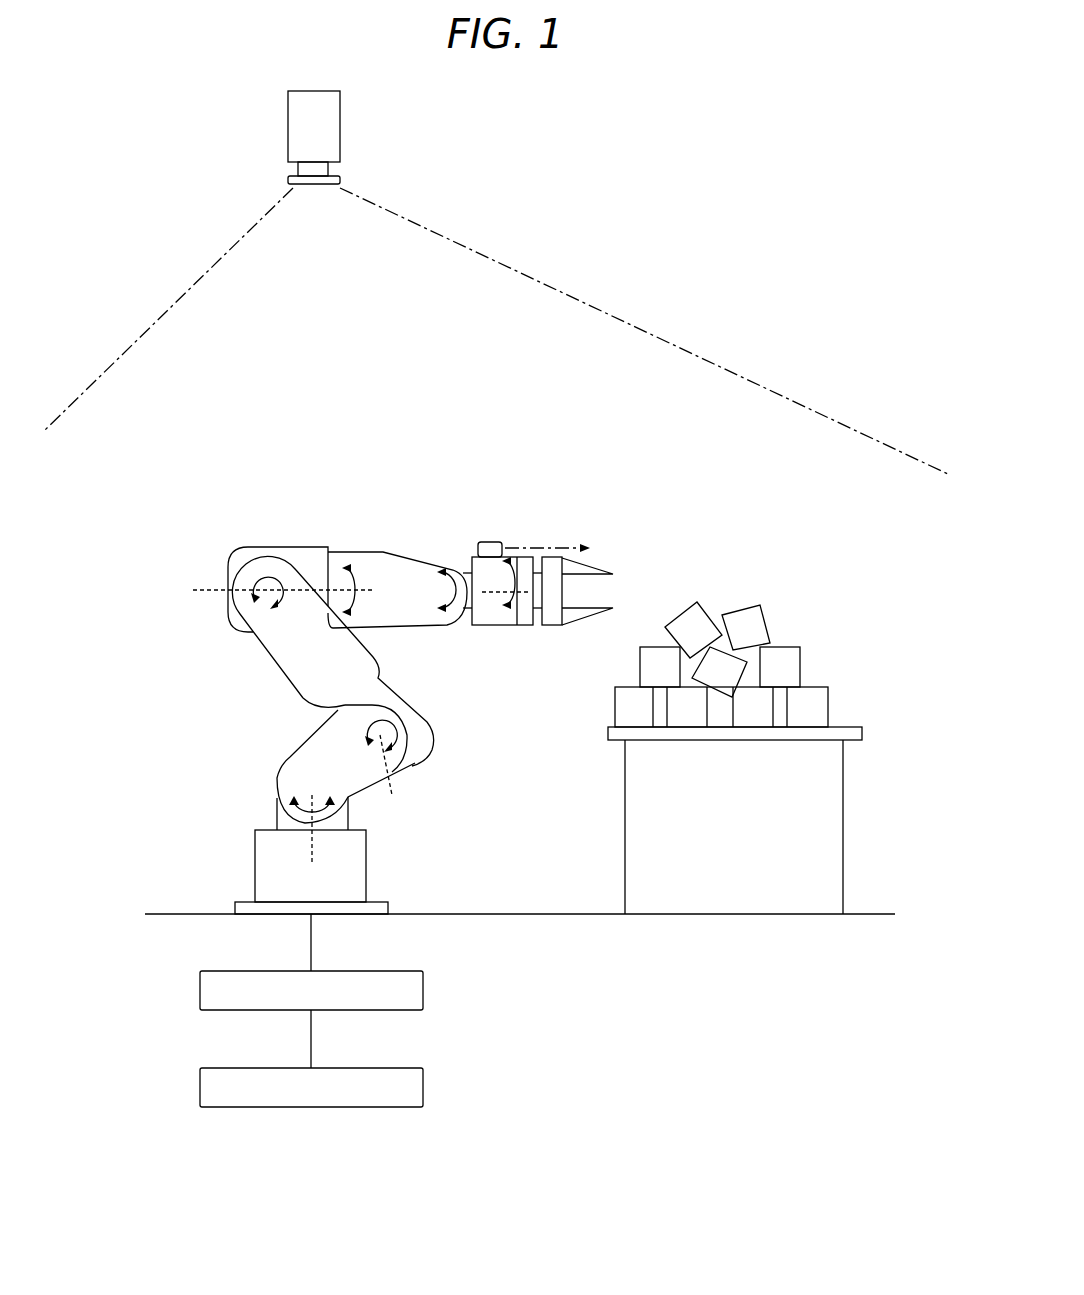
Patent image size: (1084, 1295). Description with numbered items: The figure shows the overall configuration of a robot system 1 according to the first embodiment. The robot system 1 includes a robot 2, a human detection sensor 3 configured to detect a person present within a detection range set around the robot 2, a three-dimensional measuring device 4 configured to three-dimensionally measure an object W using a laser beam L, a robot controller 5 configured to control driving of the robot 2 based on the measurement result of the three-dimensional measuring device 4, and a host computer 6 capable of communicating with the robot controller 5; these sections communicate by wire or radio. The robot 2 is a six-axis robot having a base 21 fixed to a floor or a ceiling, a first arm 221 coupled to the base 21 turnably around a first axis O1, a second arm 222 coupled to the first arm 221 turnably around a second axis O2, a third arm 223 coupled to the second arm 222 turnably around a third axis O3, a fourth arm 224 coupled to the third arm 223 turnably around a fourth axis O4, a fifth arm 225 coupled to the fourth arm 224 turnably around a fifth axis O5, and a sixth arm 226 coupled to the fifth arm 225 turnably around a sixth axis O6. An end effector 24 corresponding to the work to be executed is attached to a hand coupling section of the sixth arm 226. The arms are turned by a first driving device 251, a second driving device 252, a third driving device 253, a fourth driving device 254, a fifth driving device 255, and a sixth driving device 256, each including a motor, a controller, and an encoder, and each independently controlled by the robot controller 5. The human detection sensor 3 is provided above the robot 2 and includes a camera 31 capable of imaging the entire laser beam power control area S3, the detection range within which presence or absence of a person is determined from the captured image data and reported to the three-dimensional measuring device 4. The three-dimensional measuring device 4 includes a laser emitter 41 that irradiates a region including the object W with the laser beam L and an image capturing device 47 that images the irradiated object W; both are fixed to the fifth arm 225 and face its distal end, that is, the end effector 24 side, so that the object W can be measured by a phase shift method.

The robot system 1 is at (699, 188).
The robot 2 is at (402, 526).
The human detection sensor 3 is at (312, 137).
The camera 31 is at (298, 127).
The three-dimensional measuring device 4 is at (486, 488).
The laser emitter 41 is at (487, 538).
The image capturing device 47 is at (473, 508).
The base 21 is at (366, 877).
The first arm 221 is at (287, 783).
The second arm 222 is at (308, 680).
The third arm 223 is at (233, 563).
The fourth arm 224 is at (343, 567).
The fifth arm 225 is at (495, 612).
The sixth arm 226 is at (523, 612).
The end effector 24 is at (580, 612).
The first driving device 251 is at (275, 822).
The second driving device 252 is at (390, 782).
The third driving device 253 is at (262, 562).
The fourth driving device 254 is at (312, 602).
The fifth driving device 255 is at (438, 562).
The sixth driving device 256 is at (507, 570).
The robot controller 5 is at (427, 990).
The host computer 6 is at (427, 1087).
The first axis O1 is at (312, 843).
The second axis O2 is at (408, 772).
The third axis O3 is at (264, 592).
The fourth axis O4 is at (323, 590).
The fifth axis O5 is at (437, 590).
The sixth axis O6 is at (483, 587).
The object W is at (687, 608).
The laser beam L is at (556, 548).
The laser beam power control area S3 is at (340, 328).